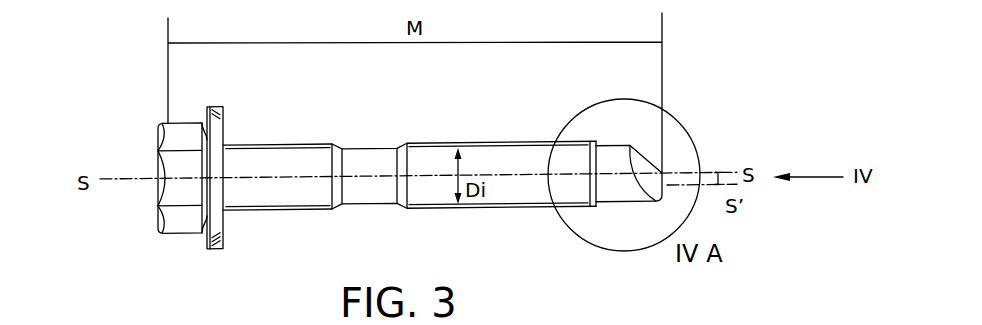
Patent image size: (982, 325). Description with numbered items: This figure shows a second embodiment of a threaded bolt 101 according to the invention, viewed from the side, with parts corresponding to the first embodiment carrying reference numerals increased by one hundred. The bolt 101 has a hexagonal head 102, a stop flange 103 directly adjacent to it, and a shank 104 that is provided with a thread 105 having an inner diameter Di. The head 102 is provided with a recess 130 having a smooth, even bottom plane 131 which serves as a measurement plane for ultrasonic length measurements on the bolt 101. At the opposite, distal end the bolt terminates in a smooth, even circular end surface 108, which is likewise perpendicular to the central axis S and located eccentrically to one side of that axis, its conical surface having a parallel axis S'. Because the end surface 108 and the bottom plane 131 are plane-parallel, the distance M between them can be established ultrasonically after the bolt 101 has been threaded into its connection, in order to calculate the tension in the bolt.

The bolt 101 is at (382, 120).
The hexagonal head 102 is at (160, 137).
The stop flange 103 is at (223, 108).
The shank 104 is at (440, 150).
The thread 105 is at (472, 207).
The circular end surface 108 is at (665, 182).
The recess 130 is at (160, 192).
The bottom plane 131 is at (160, 167).